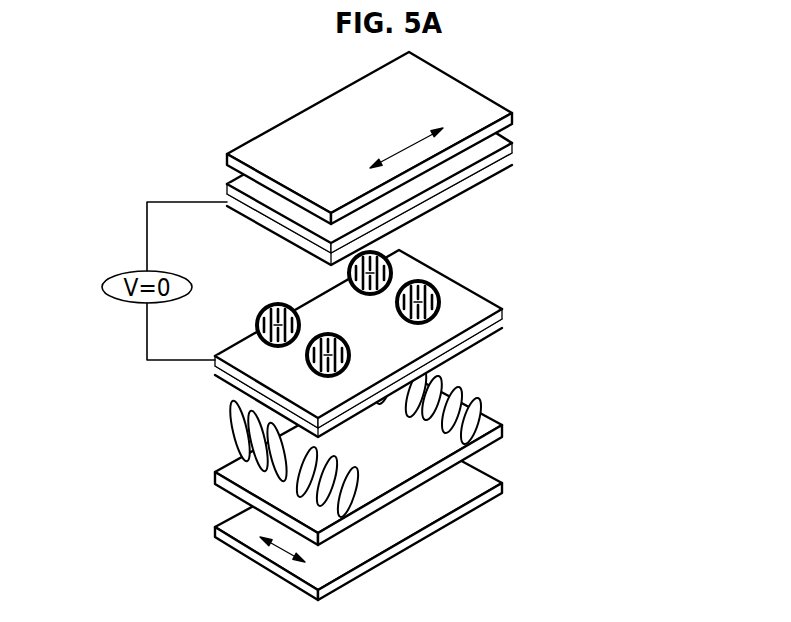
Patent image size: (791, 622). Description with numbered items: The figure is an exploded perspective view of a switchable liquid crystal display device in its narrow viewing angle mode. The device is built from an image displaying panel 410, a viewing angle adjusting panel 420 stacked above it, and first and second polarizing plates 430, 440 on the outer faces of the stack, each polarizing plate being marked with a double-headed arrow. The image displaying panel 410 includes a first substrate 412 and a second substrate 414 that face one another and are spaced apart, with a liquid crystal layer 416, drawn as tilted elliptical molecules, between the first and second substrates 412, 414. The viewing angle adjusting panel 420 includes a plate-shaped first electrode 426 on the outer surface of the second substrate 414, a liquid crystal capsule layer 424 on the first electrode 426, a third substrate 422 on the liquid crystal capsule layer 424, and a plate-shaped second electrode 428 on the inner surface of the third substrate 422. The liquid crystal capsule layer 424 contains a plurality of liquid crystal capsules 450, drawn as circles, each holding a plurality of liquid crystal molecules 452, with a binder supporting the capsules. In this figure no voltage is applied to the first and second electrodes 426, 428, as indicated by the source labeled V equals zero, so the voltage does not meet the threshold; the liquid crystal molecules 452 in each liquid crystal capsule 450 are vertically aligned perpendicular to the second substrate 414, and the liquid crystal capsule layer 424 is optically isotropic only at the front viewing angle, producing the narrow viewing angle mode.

The second polarizing plate 440 is at (513, 113).
The third substrate 422 is at (415, 166).
The second electrode 428 is at (513, 157).
The liquid crystal capsule layer 424 is at (430, 284).
The first electrode 426 is at (502, 318).
The viewing angle adjusting panel 420 is at (447, 253).
The liquid crystal molecule 452 is at (437, 287).
The liquid crystal capsule 450 is at (413, 310).
The second substrate 414 is at (502, 332).
The liquid crystal layer 416 is at (508, 397).
The image displaying panel 410 is at (455, 432).
The first substrate 412 is at (502, 433).
The first polarizing plate 430 is at (502, 488).